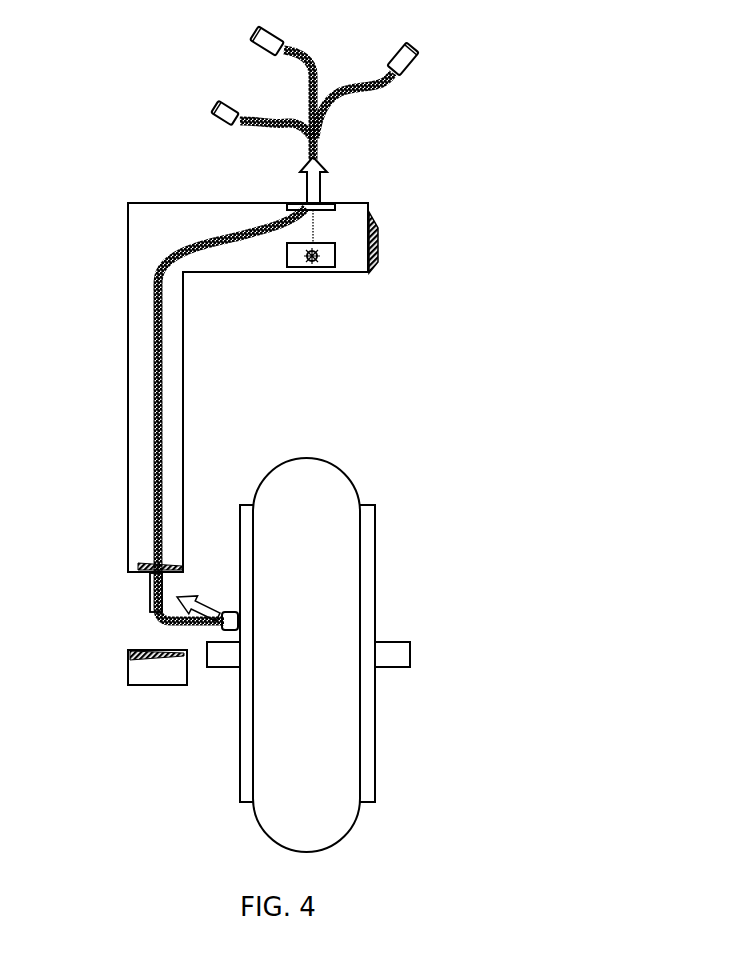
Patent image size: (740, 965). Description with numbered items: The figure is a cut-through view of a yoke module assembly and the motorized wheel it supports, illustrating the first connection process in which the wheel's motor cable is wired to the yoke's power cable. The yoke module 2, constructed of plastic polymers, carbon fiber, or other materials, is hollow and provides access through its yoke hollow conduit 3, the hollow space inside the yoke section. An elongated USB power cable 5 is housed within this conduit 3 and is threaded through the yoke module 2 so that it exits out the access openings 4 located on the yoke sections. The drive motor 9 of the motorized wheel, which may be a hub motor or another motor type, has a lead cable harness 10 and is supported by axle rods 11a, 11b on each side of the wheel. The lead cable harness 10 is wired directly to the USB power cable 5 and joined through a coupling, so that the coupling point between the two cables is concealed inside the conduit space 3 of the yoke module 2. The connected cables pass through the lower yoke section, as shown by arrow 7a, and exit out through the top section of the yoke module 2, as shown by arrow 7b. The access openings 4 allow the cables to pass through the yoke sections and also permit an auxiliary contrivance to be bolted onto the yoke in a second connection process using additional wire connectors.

The yoke module 2 is at (132, 213).
The yoke hollow conduit 3 is at (382, 237).
The access openings 4 is at (306, 203).
The USB power cable 5 is at (233, 123).
The arrow 7a is at (220, 617).
The arrow 7b is at (322, 203).
The drive motor 9 is at (375, 577).
The lead cable harness 10 is at (152, 614).
The axle rod 11a is at (220, 668).
The axle rod 11b is at (410, 663).